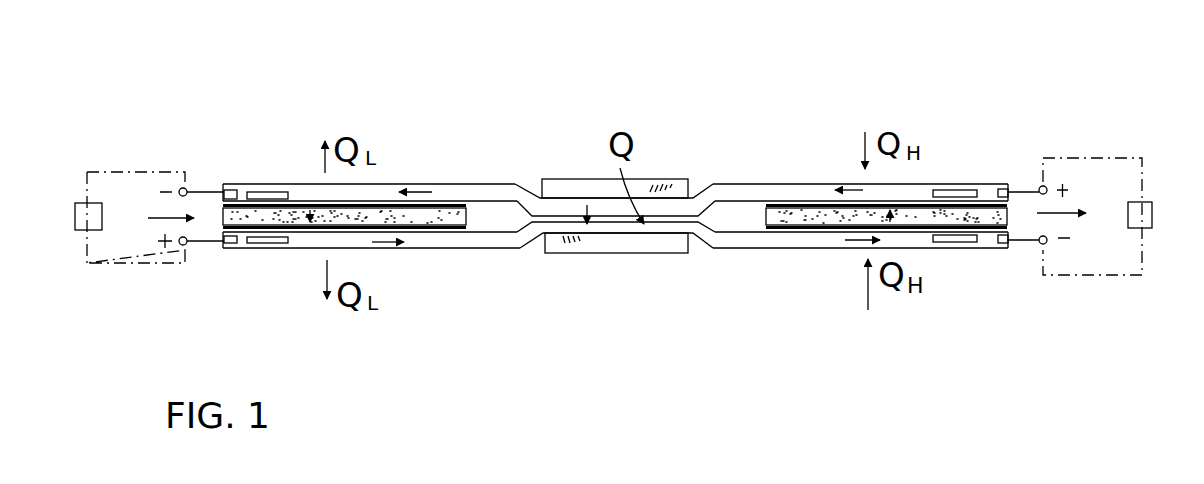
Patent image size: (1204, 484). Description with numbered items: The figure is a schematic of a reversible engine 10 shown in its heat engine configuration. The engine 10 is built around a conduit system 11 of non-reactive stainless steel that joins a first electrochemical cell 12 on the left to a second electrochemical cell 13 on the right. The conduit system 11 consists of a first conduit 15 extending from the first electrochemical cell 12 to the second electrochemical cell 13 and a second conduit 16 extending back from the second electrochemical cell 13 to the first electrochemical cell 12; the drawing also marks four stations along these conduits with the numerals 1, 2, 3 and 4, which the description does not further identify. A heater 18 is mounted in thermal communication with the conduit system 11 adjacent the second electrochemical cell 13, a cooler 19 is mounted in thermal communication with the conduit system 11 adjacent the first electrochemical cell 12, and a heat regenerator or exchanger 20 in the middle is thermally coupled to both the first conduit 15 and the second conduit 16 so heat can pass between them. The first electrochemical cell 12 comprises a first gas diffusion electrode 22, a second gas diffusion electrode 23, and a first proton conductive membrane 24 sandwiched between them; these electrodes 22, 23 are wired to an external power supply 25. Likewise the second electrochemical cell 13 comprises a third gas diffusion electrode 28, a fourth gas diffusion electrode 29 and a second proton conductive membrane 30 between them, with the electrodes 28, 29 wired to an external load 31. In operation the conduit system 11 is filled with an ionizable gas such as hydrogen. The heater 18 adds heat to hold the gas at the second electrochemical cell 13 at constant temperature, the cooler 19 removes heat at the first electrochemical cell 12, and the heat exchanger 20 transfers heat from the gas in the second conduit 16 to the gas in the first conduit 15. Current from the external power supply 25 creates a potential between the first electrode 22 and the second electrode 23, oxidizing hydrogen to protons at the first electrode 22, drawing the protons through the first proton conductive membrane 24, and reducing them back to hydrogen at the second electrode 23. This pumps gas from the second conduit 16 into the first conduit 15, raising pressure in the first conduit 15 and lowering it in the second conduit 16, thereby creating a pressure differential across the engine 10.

The first fluid duct (cold side, upper left) 1 is at (370, 168).
The second fluid duct (cold side, lower left) 2 is at (325, 264).
The third fluid duct (hot side, lower right) 3 is at (860, 264).
The fourth fluid duct (hot side, upper right) 4 is at (861, 169).
The reversible engine 10 is at (809, 68).
The conduit system 11 is at (728, 168).
The first electrochemical cell 12 is at (424, 249).
The second electrochemical cell 13 is at (805, 231).
The first conduit 15 is at (512, 252).
The second conduit 16 is at (512, 182).
The heater 18 is at (974, 240).
The cooler 19 is at (250, 241).
The heat regenerator or exchanger 20 is at (615, 242).
The first gas diffusion electrode 22 is at (387, 199).
The second gas diffusion electrode 23 is at (360, 235).
The first proton conductive membrane 24 is at (434, 216).
The external power supply 25 is at (90, 230).
The third gas diffusion electrode 28 is at (777, 229).
The fourth gas diffusion electrode 29 is at (793, 202).
The second proton conductive membrane 30 is at (808, 208).
The external load 31 is at (1130, 228).